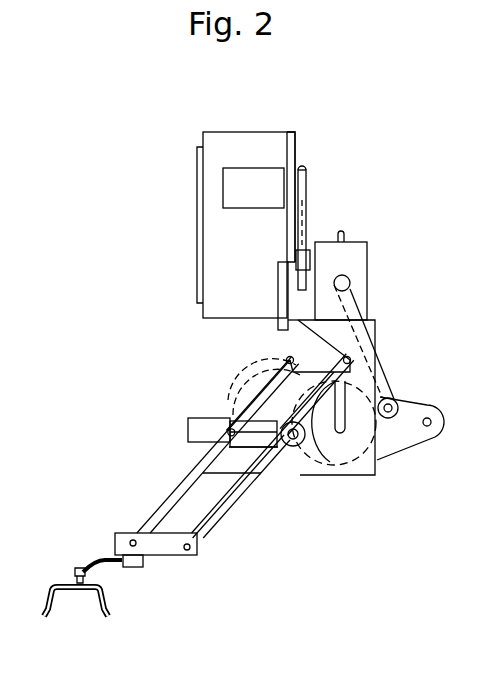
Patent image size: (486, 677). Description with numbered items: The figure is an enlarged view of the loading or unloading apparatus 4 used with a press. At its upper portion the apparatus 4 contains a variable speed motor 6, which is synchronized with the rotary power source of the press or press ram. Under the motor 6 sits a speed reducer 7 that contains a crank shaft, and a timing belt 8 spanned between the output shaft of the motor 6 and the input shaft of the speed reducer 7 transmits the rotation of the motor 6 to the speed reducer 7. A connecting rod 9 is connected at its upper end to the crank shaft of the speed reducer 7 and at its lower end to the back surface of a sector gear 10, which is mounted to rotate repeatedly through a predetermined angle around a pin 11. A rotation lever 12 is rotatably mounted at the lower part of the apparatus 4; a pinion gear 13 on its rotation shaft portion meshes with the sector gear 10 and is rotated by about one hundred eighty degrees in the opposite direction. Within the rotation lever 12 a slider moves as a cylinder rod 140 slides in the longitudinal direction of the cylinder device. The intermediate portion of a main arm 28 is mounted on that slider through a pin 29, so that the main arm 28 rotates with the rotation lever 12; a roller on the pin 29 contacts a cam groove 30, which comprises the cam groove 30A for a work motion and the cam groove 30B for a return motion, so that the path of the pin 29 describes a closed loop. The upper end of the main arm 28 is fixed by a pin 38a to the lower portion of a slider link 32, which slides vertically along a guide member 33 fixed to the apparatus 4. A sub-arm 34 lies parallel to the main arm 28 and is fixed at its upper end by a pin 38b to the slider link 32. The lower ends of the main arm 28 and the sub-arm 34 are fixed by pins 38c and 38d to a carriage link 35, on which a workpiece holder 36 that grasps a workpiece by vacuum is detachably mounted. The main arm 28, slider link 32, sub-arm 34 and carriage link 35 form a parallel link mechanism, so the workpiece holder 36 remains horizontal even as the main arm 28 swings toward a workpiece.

The loading or unloading apparatus 4 is at (190, 326).
The variable speed motor 6 is at (242, 172).
The speed reducer 7 is at (356, 245).
The timing belt 8 is at (306, 222).
The connecting rod 9 is at (384, 395).
The sector gear 10 is at (405, 442).
The pin 11 is at (428, 418).
The rotation lever 12 is at (297, 446).
The pinion gear 13 is at (303, 447).
The main arm 28 is at (177, 487).
The pin 29 is at (188, 428).
The cam groove 30 is at (110, 344).
The cam groove for a work motion 30A is at (235, 385).
The cam groove for a return motion 30B is at (235, 410).
The slider link 32 is at (278, 326).
The guide member 33 is at (283, 222).
The sub-arm 34 is at (235, 500).
The carriage link 35 is at (124, 534).
The workpiece holder 36 is at (97, 565).
The pin 38a is at (283, 360).
The pin 38b is at (343, 357).
The pin 38c is at (133, 540).
The pin 38d is at (188, 551).
The cylinder rod 140 is at (267, 458).